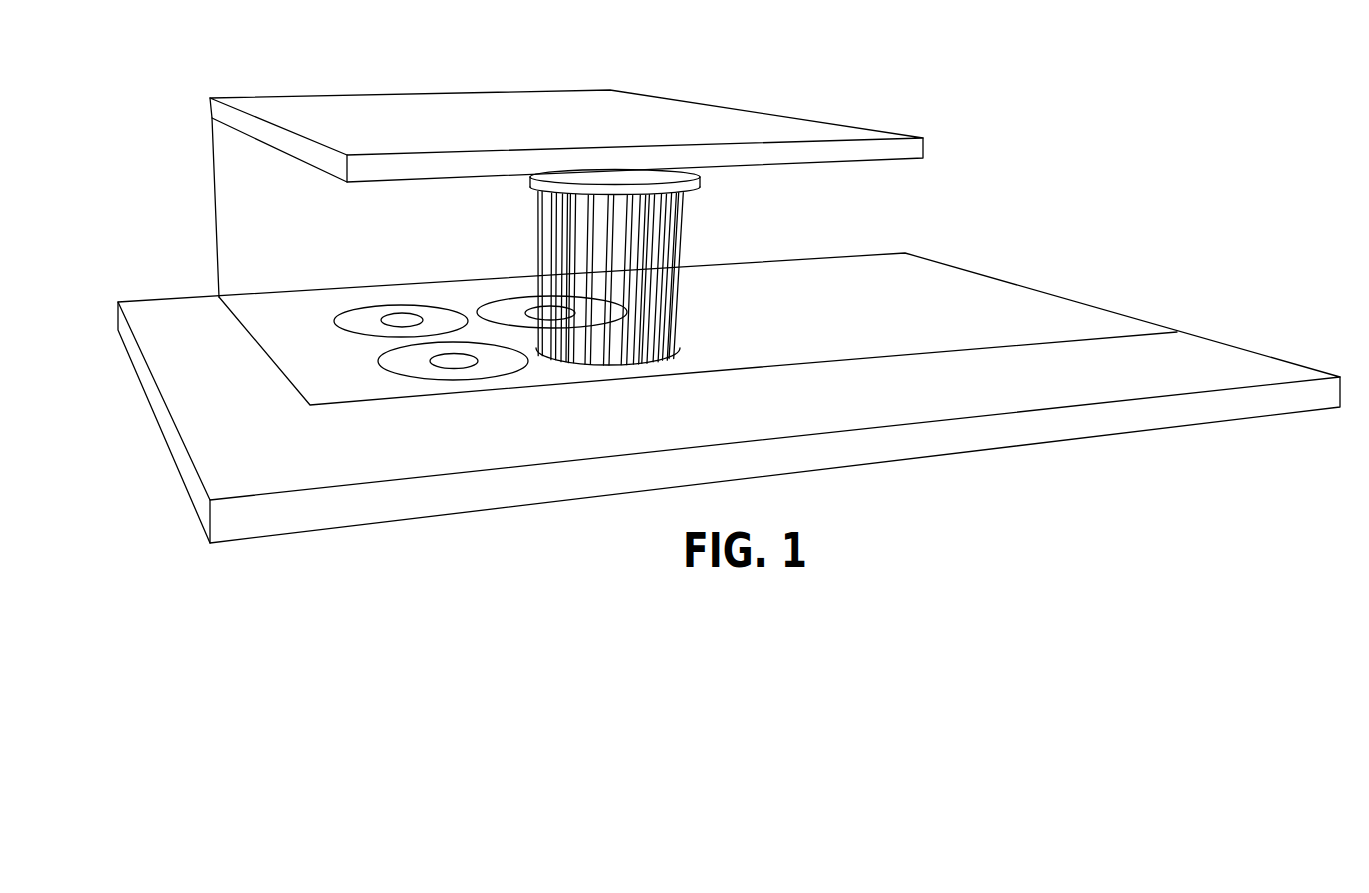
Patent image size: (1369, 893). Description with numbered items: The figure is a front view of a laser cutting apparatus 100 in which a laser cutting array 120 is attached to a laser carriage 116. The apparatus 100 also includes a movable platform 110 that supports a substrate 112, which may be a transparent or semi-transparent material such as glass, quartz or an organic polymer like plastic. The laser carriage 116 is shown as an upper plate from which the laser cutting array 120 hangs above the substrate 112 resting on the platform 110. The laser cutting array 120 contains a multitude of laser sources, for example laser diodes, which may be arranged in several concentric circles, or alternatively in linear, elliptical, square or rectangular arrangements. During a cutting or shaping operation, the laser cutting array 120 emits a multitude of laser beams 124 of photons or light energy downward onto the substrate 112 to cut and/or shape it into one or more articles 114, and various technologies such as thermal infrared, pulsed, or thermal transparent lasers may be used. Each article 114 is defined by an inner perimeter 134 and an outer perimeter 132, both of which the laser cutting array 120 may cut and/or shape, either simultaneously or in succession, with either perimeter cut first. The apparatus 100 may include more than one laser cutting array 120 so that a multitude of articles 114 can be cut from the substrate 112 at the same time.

The apparatus 100 is at (183, 156).
The movable platform 110 is at (848, 455).
The substrate 112 is at (947, 287).
The article 114 is at (408, 360).
The laser carriage 116 is at (307, 110).
The laser cutting array 120 is at (685, 192).
The laser beams 124 is at (667, 262).
The outer perimeter 132 is at (532, 357).
The inner perimeter 134 is at (470, 365).